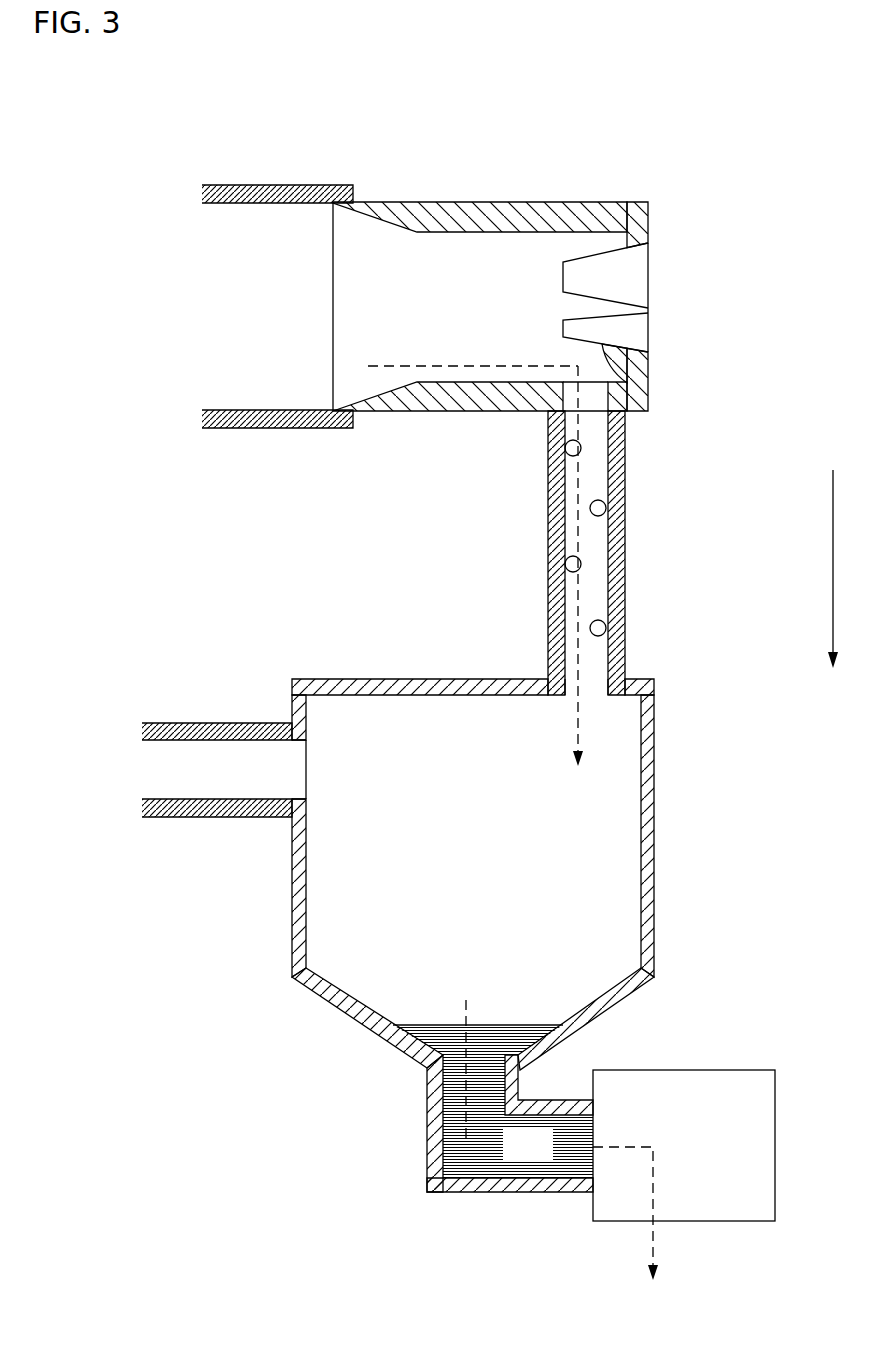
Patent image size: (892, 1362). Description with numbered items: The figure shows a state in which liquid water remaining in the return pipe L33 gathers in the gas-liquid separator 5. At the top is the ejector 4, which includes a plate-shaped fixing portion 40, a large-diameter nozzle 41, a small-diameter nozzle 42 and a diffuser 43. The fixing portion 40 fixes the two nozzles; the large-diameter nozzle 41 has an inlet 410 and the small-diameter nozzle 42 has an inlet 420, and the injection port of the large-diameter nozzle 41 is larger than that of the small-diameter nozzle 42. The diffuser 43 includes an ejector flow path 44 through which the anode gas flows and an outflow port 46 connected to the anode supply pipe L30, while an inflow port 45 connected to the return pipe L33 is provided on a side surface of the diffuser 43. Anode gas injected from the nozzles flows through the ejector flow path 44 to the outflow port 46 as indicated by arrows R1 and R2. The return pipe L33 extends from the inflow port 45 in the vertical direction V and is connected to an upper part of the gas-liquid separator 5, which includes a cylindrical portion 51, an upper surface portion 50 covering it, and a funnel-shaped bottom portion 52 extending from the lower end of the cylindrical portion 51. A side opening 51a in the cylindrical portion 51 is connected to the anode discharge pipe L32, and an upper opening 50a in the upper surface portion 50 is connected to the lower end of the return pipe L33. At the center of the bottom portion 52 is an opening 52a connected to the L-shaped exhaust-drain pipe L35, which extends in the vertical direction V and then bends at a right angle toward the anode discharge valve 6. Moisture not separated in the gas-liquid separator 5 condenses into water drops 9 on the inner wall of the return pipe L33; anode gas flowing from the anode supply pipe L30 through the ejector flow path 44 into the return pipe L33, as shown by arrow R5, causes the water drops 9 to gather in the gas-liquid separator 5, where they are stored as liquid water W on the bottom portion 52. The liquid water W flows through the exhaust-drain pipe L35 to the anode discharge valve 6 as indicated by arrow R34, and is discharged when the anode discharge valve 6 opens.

The ejector 4 is at (487, 439).
The fixing portion 40 is at (519, 281).
The large-diameter nozzle 41 is at (629, 238).
The inlet of the large-diameter nozzle 410 is at (647, 253).
The inlet of the small-diameter nozzle 420 is at (648, 315).
The small-diameter nozzle 42 is at (645, 378).
The diffuser 43 is at (447, 202).
The ejector flow path 44 is at (464, 319).
The inflow port 45 is at (651, 548).
The outflow port 46 is at (333, 287).
The water drops 9 is at (565, 440).
The gas-liquid separator 5 is at (454, 897).
The upper surface portion 50 is at (496, 688).
The upper opening 50a is at (570, 696).
The cylindrical portion 51 is at (453, 836).
The side opening 51a is at (308, 765).
The bottom portion 52 is at (330, 1004).
The opening of the bottom portion 52a is at (425, 1058).
The anode discharge valve 6 is at (730, 1070).
The anode supply pipe L30 is at (273, 185).
The anode discharge pipe L32 is at (215, 723).
The return pipe L33 is at (627, 527).
The exhaust-drain pipe L35 is at (542, 1098).
The arrow indicating anode gas flow R1 is at (711, 258).
The arrow indicating anode gas flow R2 is at (709, 347).
The arrow indicating anode gas flow into return pipe R5 is at (473, 346).
The arrow indicating liquid water flow R34 is at (478, 1008).
The liquid water W is at (540, 1158).
The vertical direction V is at (833, 588).